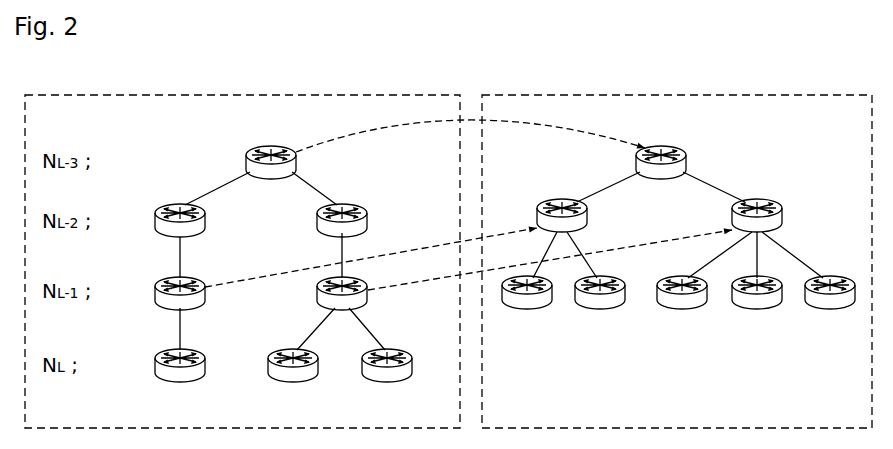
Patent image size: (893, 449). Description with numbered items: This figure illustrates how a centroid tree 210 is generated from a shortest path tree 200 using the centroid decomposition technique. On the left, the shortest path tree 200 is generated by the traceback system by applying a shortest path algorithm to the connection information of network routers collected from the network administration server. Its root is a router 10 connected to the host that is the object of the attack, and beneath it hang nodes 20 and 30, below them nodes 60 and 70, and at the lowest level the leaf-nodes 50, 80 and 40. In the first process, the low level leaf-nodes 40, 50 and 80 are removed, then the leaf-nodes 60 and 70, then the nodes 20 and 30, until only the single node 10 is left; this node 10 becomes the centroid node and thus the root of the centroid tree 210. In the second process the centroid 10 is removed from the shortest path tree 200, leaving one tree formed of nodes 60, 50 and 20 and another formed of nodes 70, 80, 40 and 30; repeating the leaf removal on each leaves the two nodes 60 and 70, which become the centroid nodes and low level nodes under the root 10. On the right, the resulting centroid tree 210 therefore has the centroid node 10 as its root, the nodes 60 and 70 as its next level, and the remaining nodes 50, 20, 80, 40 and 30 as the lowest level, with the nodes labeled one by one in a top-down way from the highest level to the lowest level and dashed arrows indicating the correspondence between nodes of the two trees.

The shortest path tree 200 is at (243, 94).
The centroid tree 210 is at (667, 94).
The router 10 is at (252, 148).
The node 20 is at (158, 216).
The node 30 is at (368, 211).
The node 40 is at (405, 377).
The node 50 is at (158, 361).
The node 60 is at (158, 288).
The node 70 is at (370, 300).
The node 80 is at (300, 382).